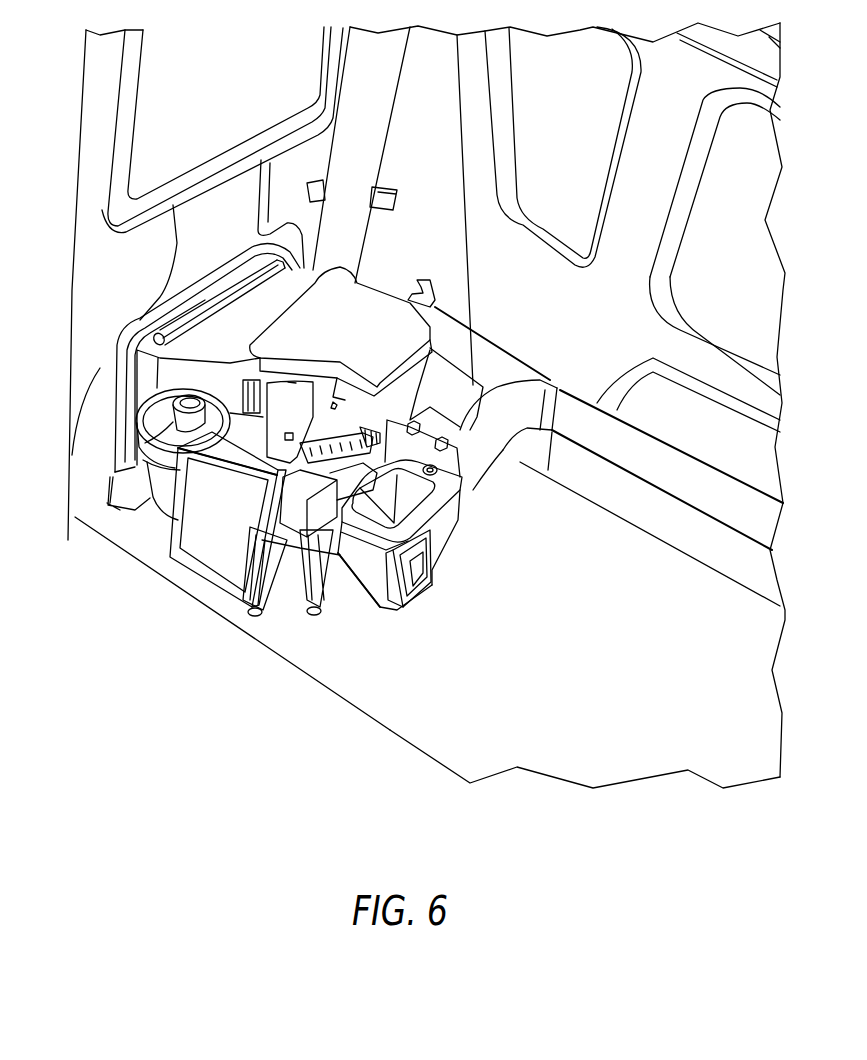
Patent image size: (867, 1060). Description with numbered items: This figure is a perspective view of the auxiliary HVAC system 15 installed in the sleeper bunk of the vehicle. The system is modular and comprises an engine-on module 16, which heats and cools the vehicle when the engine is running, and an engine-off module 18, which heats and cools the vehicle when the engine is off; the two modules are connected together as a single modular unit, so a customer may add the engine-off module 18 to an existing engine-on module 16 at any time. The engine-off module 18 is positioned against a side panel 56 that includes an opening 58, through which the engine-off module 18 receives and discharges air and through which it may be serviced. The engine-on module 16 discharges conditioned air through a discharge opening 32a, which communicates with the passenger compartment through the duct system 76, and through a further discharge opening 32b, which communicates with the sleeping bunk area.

The auxiliary HVAC system 15 is at (432, 391).
The engine-on module 16 is at (344, 605).
The engine-off module 18 is at (263, 318).
The discharge opening 32a is at (410, 497).
The discharge opening 32b is at (430, 573).
The side panel 56 is at (120, 289).
The opening 58 is at (118, 358).
The duct system 76 is at (667, 463).